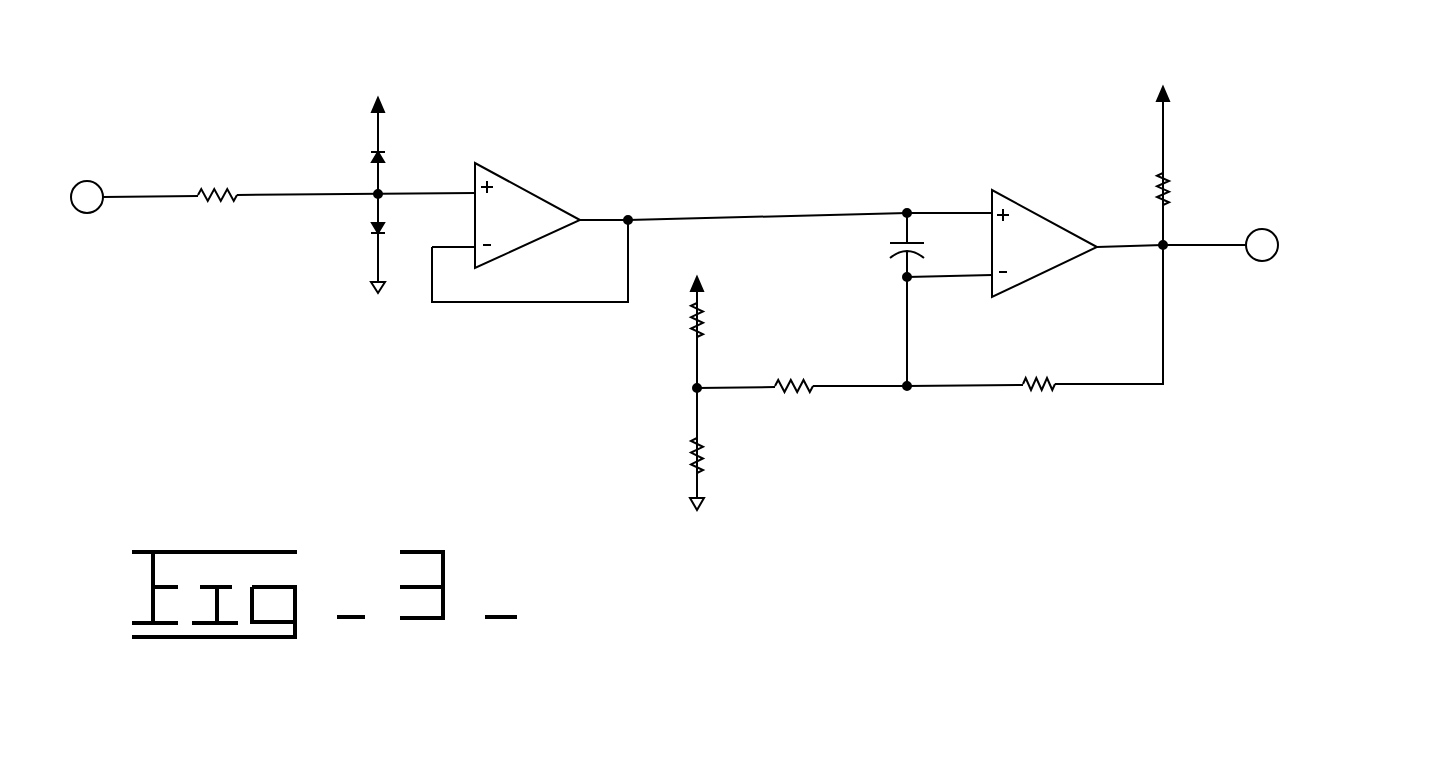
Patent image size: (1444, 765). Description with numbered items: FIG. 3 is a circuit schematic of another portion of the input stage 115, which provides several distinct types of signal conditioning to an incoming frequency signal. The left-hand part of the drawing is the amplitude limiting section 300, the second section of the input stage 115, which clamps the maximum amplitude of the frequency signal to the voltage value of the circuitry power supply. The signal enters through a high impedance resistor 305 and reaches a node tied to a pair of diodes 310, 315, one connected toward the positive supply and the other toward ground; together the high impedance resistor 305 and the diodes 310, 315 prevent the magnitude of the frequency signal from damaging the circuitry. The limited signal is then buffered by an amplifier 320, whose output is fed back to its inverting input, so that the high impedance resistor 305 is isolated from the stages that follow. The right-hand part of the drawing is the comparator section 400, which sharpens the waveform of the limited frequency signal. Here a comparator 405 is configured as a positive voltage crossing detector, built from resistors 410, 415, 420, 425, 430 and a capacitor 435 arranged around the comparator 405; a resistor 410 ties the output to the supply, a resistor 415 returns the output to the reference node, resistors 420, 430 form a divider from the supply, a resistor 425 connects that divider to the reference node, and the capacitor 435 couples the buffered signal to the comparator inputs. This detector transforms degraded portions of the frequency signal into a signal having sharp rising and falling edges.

The amplitude limiting section 300 is at (325, 376).
The high impedance resistor 305 is at (212, 200).
The diode 310 is at (386, 156).
The diode 315 is at (386, 232).
The amplifier 320 is at (526, 186).
The comparator section 400 is at (1052, 488).
The comparator 405 is at (1004, 193).
The resistor 410 is at (1165, 170).
The resistor 415 is at (1047, 384).
The resistor 420 is at (705, 467).
The resistor 425 is at (805, 387).
The resistor 430 is at (705, 334).
The capacitor 435 is at (903, 252).
The input stage 115 is at (1330, 224).